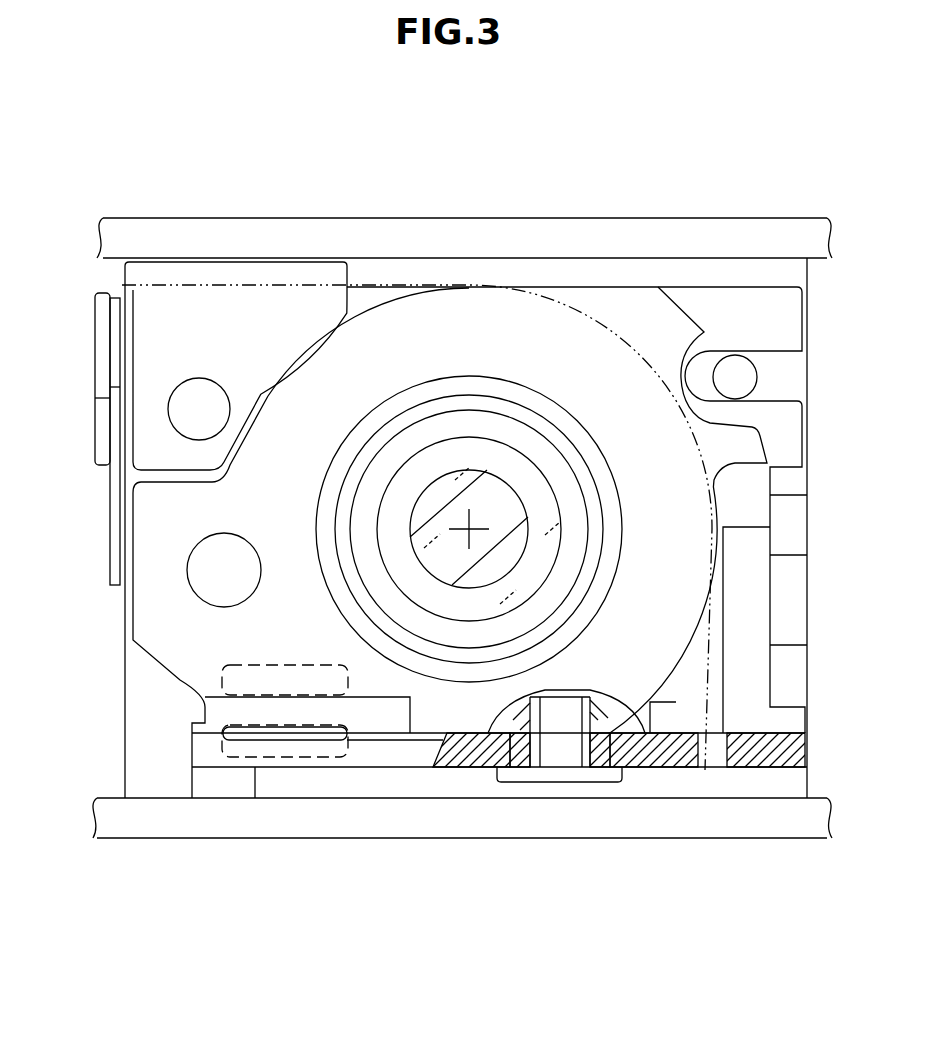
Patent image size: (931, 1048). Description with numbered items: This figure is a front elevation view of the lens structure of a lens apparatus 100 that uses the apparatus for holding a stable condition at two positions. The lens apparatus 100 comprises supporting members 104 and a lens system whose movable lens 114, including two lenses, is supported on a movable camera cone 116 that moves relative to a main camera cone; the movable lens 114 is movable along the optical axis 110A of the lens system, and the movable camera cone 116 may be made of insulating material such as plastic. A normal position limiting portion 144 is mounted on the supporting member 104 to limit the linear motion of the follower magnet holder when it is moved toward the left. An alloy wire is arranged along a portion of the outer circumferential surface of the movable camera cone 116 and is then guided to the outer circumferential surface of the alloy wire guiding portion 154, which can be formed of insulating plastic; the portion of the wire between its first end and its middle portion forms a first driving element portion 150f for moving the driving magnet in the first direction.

The lens apparatus 100 is at (640, 207).
The supporting member 104 is at (330, 827).
The optical axis 110A is at (462, 531).
The movable lens 114 is at (435, 537).
The movable camera cone 116 is at (470, 340).
The normal position limiting portion 144 is at (552, 233).
The first driving element portion 150f is at (383, 281).
The alloy wire guiding portion 154 is at (747, 708).